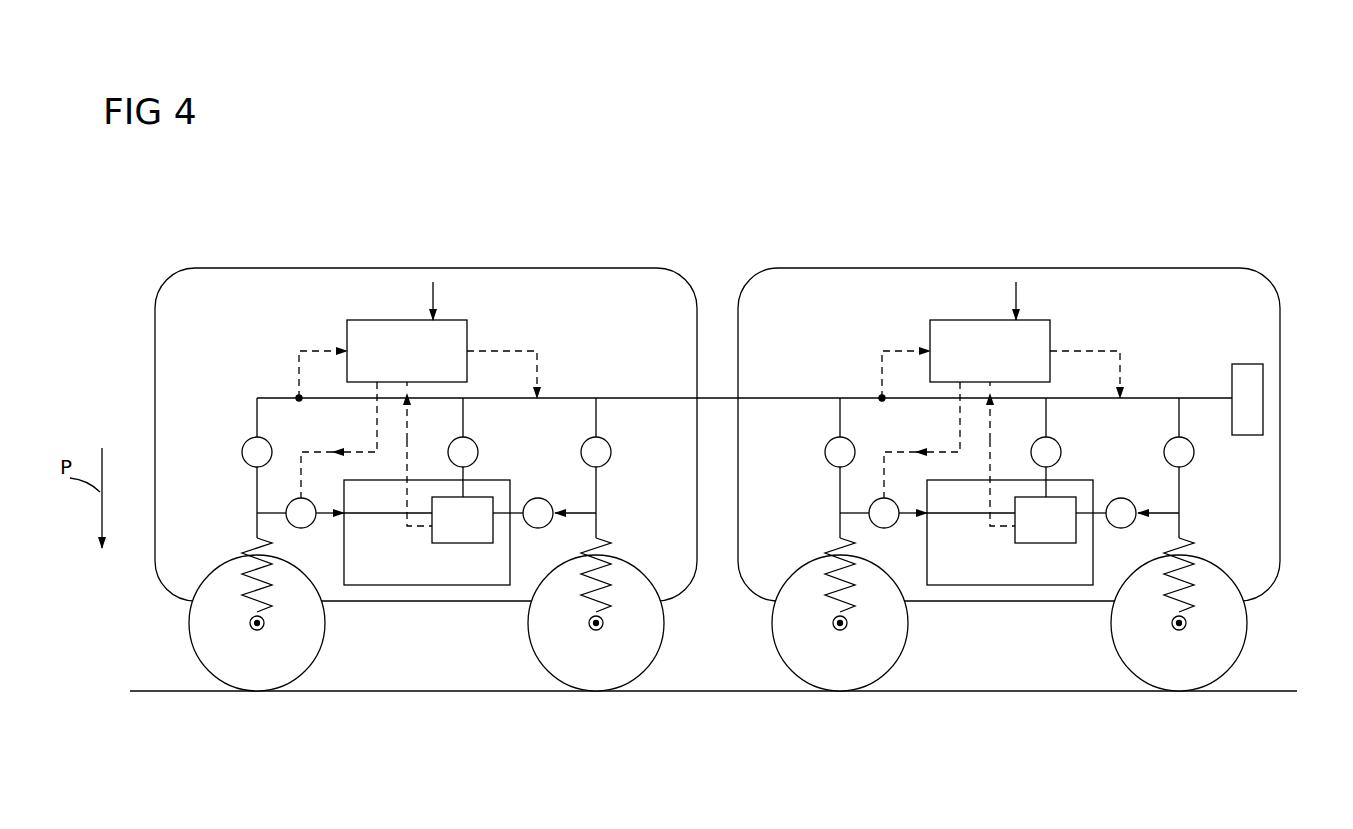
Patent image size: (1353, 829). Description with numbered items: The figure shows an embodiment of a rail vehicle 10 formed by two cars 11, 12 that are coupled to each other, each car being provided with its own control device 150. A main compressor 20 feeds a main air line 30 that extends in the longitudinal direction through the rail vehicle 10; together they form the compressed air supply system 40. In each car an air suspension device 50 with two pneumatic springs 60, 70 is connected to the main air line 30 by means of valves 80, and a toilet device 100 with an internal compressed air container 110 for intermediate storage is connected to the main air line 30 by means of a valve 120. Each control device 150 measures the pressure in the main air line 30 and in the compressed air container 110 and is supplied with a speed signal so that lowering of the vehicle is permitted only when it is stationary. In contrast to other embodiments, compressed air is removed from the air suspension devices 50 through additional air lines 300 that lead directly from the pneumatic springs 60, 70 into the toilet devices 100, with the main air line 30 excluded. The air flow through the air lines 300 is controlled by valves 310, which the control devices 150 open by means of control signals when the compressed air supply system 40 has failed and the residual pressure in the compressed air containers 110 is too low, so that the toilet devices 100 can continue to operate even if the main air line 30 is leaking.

The rail vehicle 10 is at (998, 228).
The car 11 is at (573, 290).
The car 12 is at (1158, 290).
The main compressor 20 is at (1245, 378).
The main air line 30 is at (770, 398).
The compressed air supply system 40 is at (1187, 394).
The air suspension device 50 is at (273, 612).
The pneumatic spring 60 is at (248, 613).
The pneumatic spring 70 is at (606, 612).
The valve 80 is at (251, 449).
The toilet device 100 is at (405, 577).
The compressed air container 110 is at (459, 531).
The valve 120 is at (468, 457).
The control device 150 is at (468, 333).
The air line 300 is at (256, 505).
The valve 310 is at (292, 519).